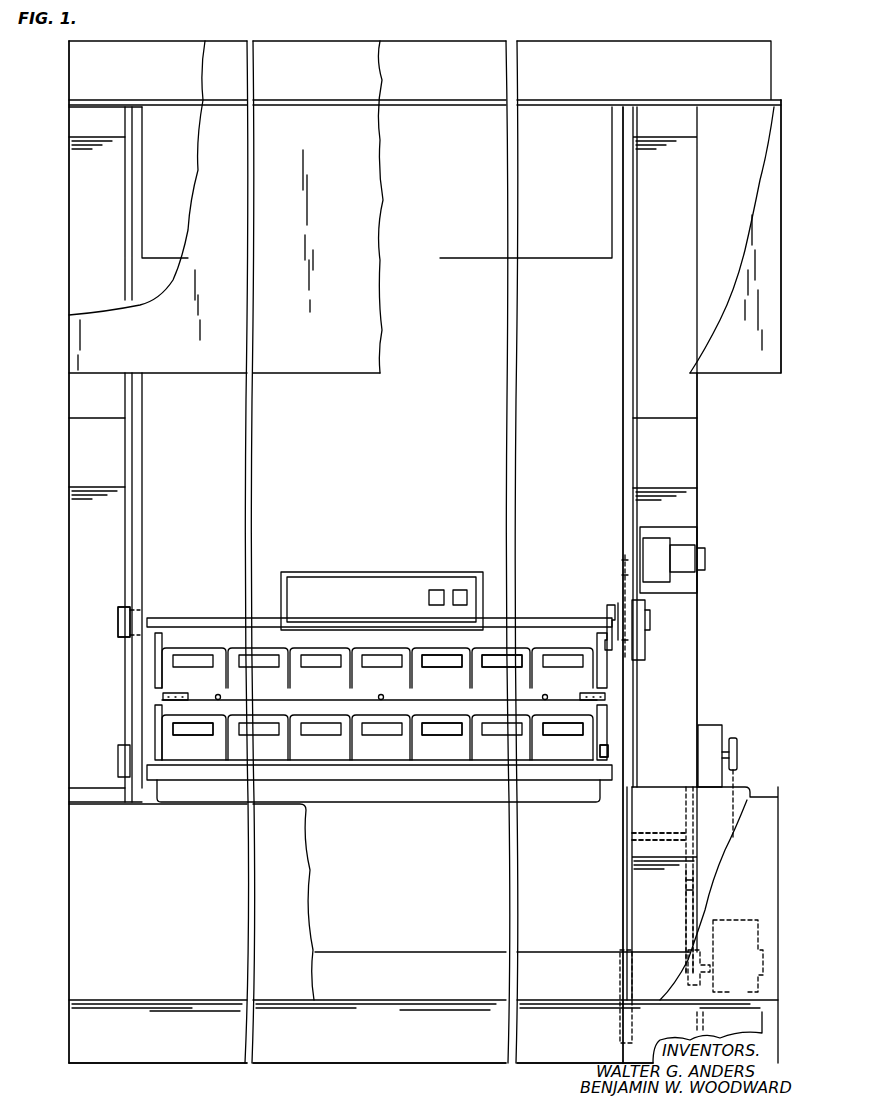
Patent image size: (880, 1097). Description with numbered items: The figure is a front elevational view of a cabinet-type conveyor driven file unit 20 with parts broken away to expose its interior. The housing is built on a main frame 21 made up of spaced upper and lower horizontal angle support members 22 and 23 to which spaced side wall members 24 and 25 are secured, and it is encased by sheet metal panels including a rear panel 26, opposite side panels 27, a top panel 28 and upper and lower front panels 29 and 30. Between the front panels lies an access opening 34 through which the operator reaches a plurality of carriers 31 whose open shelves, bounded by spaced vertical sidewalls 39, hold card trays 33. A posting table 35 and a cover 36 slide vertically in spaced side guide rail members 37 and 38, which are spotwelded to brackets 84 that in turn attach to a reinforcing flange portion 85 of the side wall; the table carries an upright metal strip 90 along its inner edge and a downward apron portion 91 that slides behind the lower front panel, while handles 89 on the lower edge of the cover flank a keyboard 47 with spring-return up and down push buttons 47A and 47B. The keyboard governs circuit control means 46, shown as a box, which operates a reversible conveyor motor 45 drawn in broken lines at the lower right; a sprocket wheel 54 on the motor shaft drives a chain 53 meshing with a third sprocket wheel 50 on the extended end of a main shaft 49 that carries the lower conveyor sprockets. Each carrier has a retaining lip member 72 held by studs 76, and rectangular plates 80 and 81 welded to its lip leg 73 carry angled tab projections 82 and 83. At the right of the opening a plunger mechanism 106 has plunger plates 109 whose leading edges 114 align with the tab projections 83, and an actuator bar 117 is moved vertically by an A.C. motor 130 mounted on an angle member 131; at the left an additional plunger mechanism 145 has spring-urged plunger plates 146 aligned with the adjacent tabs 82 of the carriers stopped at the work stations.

The file unit 20 is at (478, 34).
The main frame 21 is at (718, 482).
The upper horizontal angle support members 22 is at (646, 42).
The lower horizontal angle support members 23 is at (474, 1054).
The side wall member 24 is at (68, 645).
The side wall member 25 is at (698, 668).
The rear panel 26 is at (572, 191).
The side panels 27 is at (783, 375).
The top panel 28 is at (162, 42).
The upper front panel 29 is at (342, 42).
The lower front panel 30 is at (179, 925).
The carriers 31 is at (334, 713).
The card trays 33 is at (329, 685).
The opening 34 is at (438, 710).
The posting table 35 is at (378, 776).
The cover 36 is at (410, 487).
The side guide rail member 37 is at (143, 447).
The side guide rail member 38 is at (622, 398).
The sidewalls 39 is at (155, 653).
The reversible motor 45 is at (722, 922).
The circuit control means 46 is at (722, 728).
The keyboard 47 is at (372, 582).
The Up push button 47A is at (440, 588).
The Down push button 47B is at (461, 588).
The main shaft 49 is at (628, 848).
The third sprocket wheel 50 is at (686, 808).
The chain 53 is at (688, 905).
The sprocket wheel 54 is at (686, 975).
The lip member 72 is at (452, 686).
The retaining lip leg 73 is at (484, 696).
The studs 76 is at (216, 694).
The rectangular plate 80 is at (183, 705).
The rectangular plate 81 is at (592, 702).
The angled tab projection 82 is at (165, 695).
The angled tab projection 83 is at (606, 698).
The brackets 84 is at (115, 130).
The reinforcing flange portion 85 is at (106, 578).
The handle 89 is at (213, 618).
The upright metal strip 90 is at (450, 780).
The apron portion 91 is at (421, 912).
The plunger mechanism 106 is at (684, 614).
The plunger plates 109 is at (610, 608).
The leading edges 114 is at (600, 757).
The actuator bar 117 is at (644, 638).
The A.C. motor 130 is at (700, 558).
The angle member 131 is at (686, 534).
The plunger mechanism 145 is at (153, 600).
The plunger plates 146 is at (152, 608).